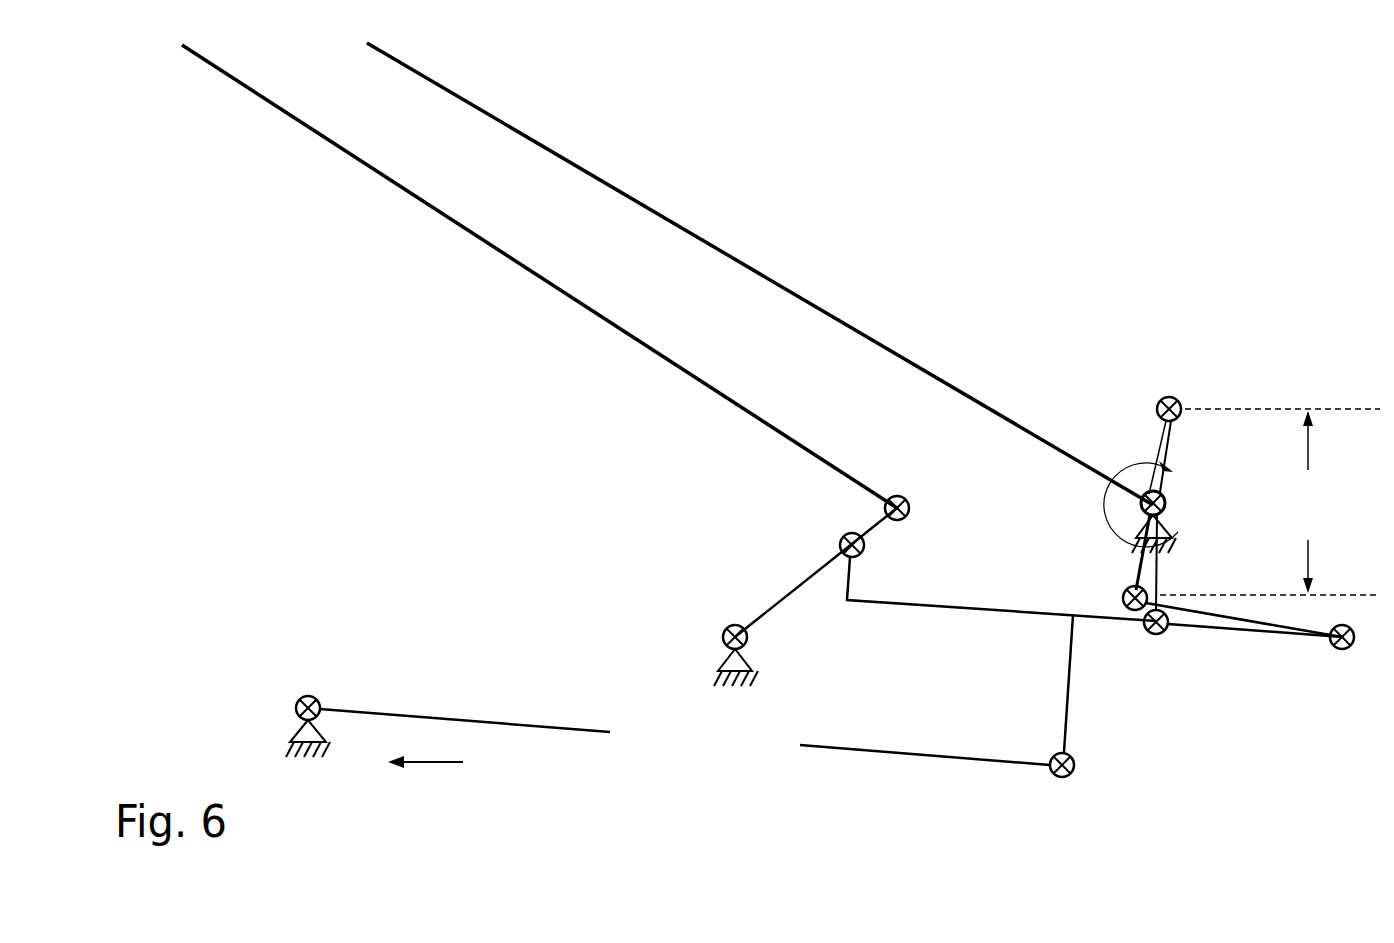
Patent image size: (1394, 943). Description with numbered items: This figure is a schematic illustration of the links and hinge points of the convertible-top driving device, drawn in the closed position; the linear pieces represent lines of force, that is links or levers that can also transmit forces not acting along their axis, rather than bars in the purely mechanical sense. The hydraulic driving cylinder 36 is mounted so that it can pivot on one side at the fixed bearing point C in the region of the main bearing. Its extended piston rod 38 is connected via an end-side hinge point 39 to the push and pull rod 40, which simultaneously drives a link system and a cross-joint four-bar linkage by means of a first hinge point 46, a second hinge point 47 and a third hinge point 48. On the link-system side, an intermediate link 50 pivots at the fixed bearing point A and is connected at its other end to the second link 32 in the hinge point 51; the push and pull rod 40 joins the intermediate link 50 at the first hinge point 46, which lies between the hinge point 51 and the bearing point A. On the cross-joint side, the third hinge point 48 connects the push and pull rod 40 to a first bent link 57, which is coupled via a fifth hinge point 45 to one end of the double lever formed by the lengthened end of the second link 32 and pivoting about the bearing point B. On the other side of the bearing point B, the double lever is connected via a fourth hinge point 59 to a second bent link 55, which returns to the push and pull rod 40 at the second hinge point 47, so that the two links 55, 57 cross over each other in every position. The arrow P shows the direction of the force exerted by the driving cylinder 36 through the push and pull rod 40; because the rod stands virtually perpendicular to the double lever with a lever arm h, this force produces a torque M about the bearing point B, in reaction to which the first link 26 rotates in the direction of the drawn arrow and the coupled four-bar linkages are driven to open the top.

The first link 26 is at (737, 255).
The second link 32 is at (512, 262).
The hydraulic driving cylinder 36 is at (383, 712).
The piston rod 38 is at (925, 753).
The end-side hinge point 39 is at (1070, 776).
The push and pull rod 40 is at (1008, 614).
The fifth hinge point 45 is at (1130, 612).
The first hinge point 46 is at (843, 538).
The second hinge point 47 is at (1157, 636).
The third hinge point 48 is at (1340, 650).
The intermediate link 50 is at (783, 597).
The hinge point 51 is at (903, 495).
The second bent link 55 is at (1225, 617).
The first bent link 57 is at (1137, 565).
The fourth hinge point 59 is at (1170, 396).
The fixed bearing point A is at (722, 634).
The bearing point B is at (1145, 512).
The bearing point C is at (295, 700).
The torque M is at (1153, 507).
The arrow P is at (425, 750).
The lever arm h is at (1270, 502).